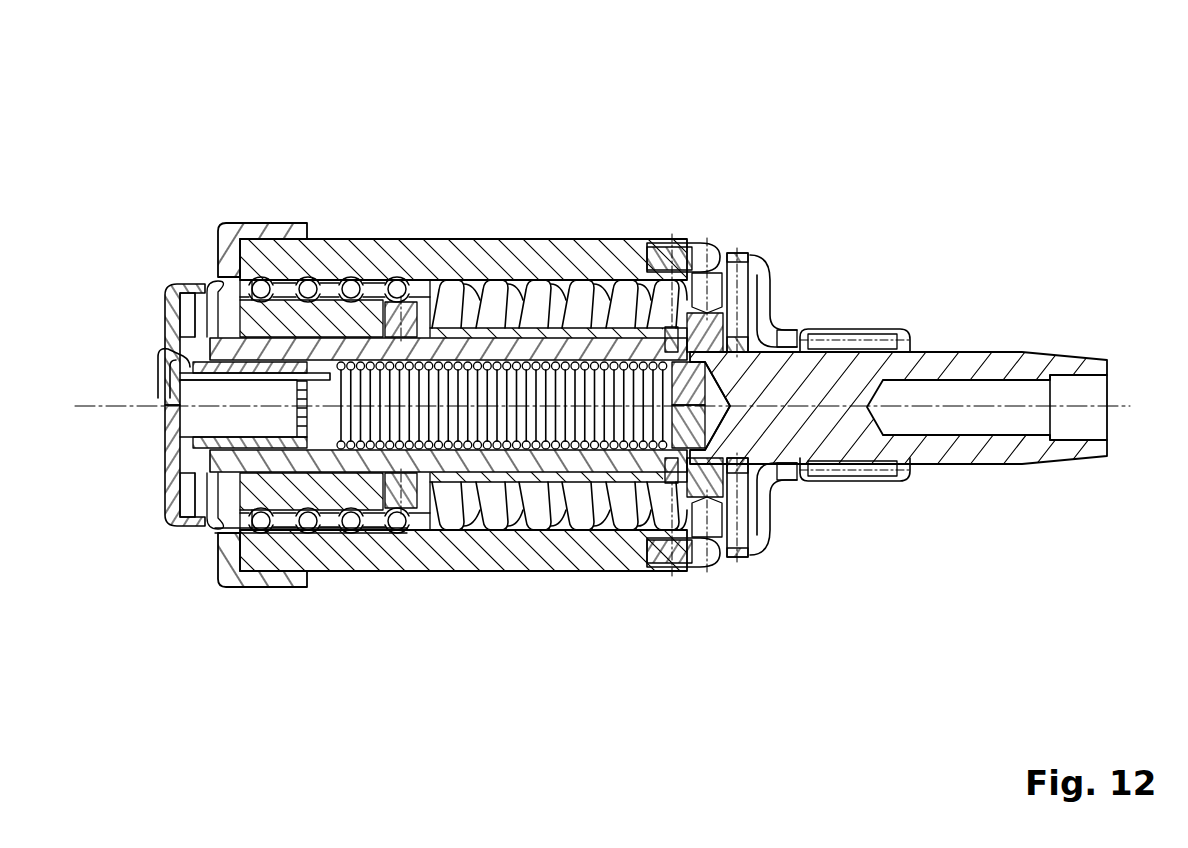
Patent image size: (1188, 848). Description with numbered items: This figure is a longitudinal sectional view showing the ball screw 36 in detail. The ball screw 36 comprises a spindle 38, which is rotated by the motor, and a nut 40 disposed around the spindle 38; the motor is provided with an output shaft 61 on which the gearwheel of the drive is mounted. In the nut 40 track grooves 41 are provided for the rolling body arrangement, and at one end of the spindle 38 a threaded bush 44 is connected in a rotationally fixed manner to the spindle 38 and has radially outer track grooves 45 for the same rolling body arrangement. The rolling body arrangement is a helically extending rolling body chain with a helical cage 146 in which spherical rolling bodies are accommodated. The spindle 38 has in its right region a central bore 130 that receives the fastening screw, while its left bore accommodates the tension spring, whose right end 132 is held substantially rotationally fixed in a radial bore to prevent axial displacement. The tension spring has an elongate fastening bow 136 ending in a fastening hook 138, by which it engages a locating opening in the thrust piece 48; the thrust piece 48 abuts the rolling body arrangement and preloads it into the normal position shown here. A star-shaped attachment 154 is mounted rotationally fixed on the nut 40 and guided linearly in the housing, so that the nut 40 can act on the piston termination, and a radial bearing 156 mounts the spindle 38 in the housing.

The ball screw 36 is at (550, 186).
The spindle 38 is at (962, 352).
The nut 40 is at (465, 260).
The track grooves 41 is at (508, 517).
The threaded bush 44 is at (330, 300).
The radially outer track grooves 45 is at (413, 500).
The thrust piece 48 is at (207, 514).
The output shaft 61 is at (752, 262).
The central bore 130 is at (1033, 396).
The right end 132 is at (672, 285).
The fastening bow 136 is at (278, 505).
The fastening hook 138 is at (165, 398).
The helical cage 146 is at (333, 522).
The star-shaped attachment 154 is at (250, 242).
The radial bearing 156 is at (852, 340).